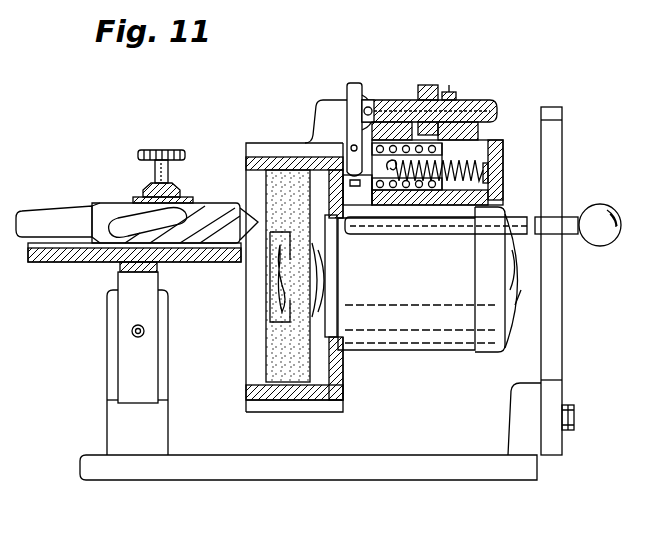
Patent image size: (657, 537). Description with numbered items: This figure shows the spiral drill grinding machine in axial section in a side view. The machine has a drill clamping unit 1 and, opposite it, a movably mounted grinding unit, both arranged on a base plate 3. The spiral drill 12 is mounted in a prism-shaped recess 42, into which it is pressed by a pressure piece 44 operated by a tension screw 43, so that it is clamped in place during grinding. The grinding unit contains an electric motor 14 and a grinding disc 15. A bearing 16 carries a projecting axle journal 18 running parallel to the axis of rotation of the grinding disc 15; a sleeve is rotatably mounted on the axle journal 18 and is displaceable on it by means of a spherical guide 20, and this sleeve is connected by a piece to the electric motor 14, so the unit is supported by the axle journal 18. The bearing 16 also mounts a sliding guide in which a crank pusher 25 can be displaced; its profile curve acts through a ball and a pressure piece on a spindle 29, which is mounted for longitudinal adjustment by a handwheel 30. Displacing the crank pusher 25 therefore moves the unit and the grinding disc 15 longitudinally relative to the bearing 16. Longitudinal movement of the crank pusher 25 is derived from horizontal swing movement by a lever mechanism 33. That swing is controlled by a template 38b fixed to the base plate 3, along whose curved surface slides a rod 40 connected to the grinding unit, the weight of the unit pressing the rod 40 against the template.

The drill clamping unit 1 is at (106, 303).
The base plate 3 is at (371, 472).
The spiral drill 12 is at (103, 210).
The electric motor 14 is at (497, 320).
The grinding disc 15 is at (268, 343).
The bearing 16 is at (252, 152).
The axle journal 18 is at (353, 178).
The spherical guide 20 is at (458, 145).
The crank pusher 25 is at (366, 98).
The spindle 29 is at (480, 100).
The handwheel 30 is at (431, 86).
The lever mechanism 33 is at (332, 97).
The template 38b is at (556, 320).
The rod 40 is at (566, 218).
The prism-shaped recess 42 is at (50, 252).
The tension screw 43 is at (172, 150).
The pressure piece 44 is at (186, 198).